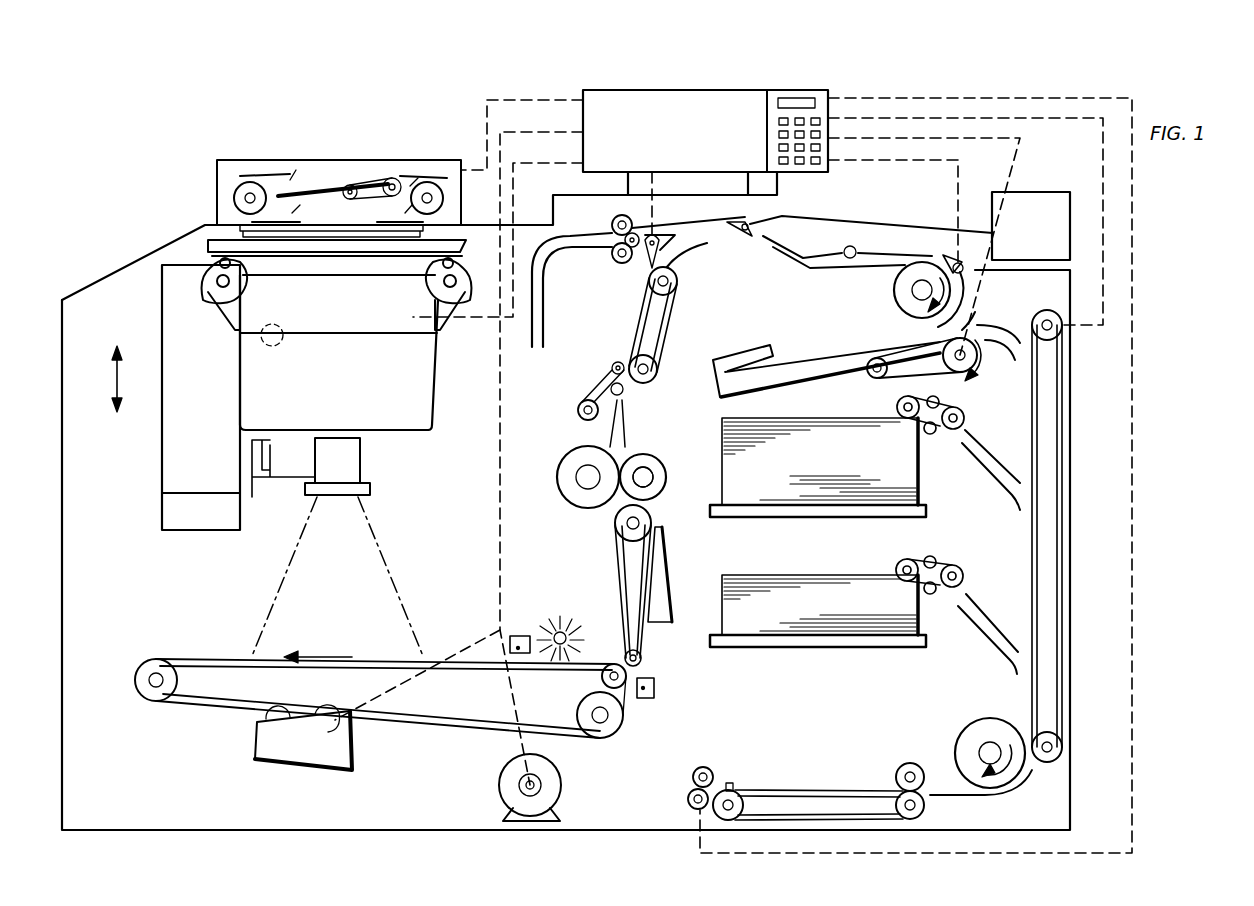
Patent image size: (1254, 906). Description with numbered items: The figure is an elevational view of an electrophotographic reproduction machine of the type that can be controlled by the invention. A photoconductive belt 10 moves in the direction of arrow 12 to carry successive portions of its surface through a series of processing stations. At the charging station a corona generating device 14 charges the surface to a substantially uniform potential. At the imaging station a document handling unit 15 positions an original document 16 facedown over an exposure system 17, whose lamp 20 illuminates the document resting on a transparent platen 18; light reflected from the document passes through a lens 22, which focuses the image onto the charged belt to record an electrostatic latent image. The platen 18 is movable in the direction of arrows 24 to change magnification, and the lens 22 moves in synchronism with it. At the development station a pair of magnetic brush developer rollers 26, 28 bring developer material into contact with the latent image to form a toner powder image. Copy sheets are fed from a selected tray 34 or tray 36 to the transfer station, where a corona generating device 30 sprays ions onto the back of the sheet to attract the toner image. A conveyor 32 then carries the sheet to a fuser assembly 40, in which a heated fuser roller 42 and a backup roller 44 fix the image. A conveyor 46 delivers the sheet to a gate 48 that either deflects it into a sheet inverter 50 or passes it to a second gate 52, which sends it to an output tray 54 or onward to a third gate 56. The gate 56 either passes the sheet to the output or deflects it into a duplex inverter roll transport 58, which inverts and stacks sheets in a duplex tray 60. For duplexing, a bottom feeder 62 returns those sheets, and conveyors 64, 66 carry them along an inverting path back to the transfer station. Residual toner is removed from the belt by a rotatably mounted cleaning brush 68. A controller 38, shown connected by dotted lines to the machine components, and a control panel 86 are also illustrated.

The belt 10 is at (432, 660).
The arrow 12 is at (340, 657).
The corona generating device 14 is at (518, 636).
The document handling unit 15 is at (335, 169).
The original document 16 is at (298, 180).
The exposure system 17 is at (470, 437).
The transparent platen 18 is at (330, 225).
The lamp 20 is at (277, 340).
The lens 22 is at (347, 463).
The arrows 24 is at (112, 386).
The magnetic brush developer roller 26 is at (264, 722).
The magnetic brush developer roller 28 is at (332, 732).
The corona generating device 30 is at (654, 688).
The conveyor 32 is at (618, 558).
The tray 34 is at (872, 520).
The tray 36 is at (853, 647).
The controller 38 is at (583, 98).
The fuser assembly 40 is at (652, 463).
The heated fuser roller 42 is at (572, 457).
The backup roller 44 is at (657, 482).
The conveyor 46 is at (690, 330).
The gate 48 is at (687, 252).
The sheet inverter 50 is at (542, 278).
The second gate 52 is at (742, 237).
The output tray 54 is at (885, 232).
The third gate 56 is at (963, 266).
The duplex inverter roll transport 58 is at (972, 301).
The duplex tray 60 is at (808, 378).
The bottom feeder 62 is at (877, 378).
The conveyor 64 is at (1060, 460).
The conveyor 66 is at (805, 790).
The brush 68 is at (598, 604).
The control panel 86 is at (828, 110).